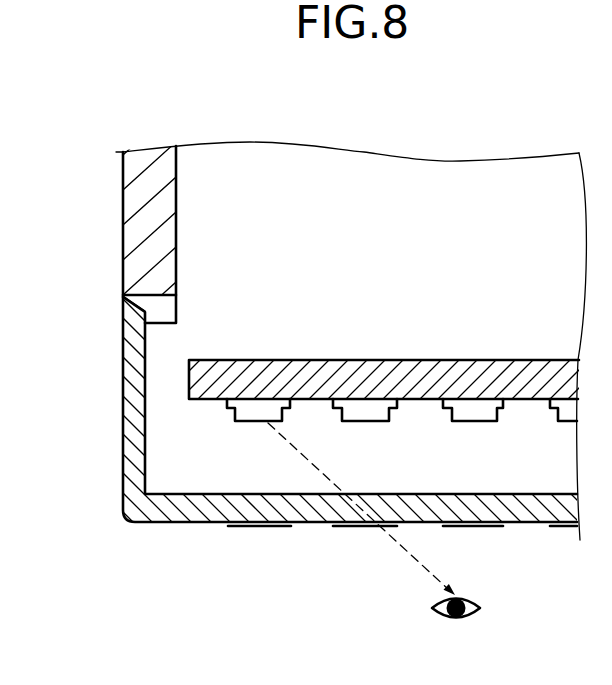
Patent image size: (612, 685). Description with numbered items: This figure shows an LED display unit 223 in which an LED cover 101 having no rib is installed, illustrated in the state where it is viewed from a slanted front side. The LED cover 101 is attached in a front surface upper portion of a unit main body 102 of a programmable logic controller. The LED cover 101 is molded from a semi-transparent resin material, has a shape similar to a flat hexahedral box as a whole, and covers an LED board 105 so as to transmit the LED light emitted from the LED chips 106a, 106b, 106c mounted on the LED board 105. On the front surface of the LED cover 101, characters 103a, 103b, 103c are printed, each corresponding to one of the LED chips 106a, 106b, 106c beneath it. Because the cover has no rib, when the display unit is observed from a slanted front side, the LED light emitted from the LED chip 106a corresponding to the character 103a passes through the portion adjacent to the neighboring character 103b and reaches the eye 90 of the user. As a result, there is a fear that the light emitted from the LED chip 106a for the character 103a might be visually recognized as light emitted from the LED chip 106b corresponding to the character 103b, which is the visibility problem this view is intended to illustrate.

The eye 90 is at (463, 618).
The LED cover 101 is at (127, 396).
The unit main body 102 is at (127, 205).
The character 103a is at (258, 528).
The character 103b is at (365, 528).
The character 103c is at (473, 528).
The LED board 105 is at (428, 368).
The LED chip 106a is at (258, 410).
The LED chip 106b is at (365, 410).
The LED chip 106c is at (473, 410).
The LED display unit 223 is at (96, 306).